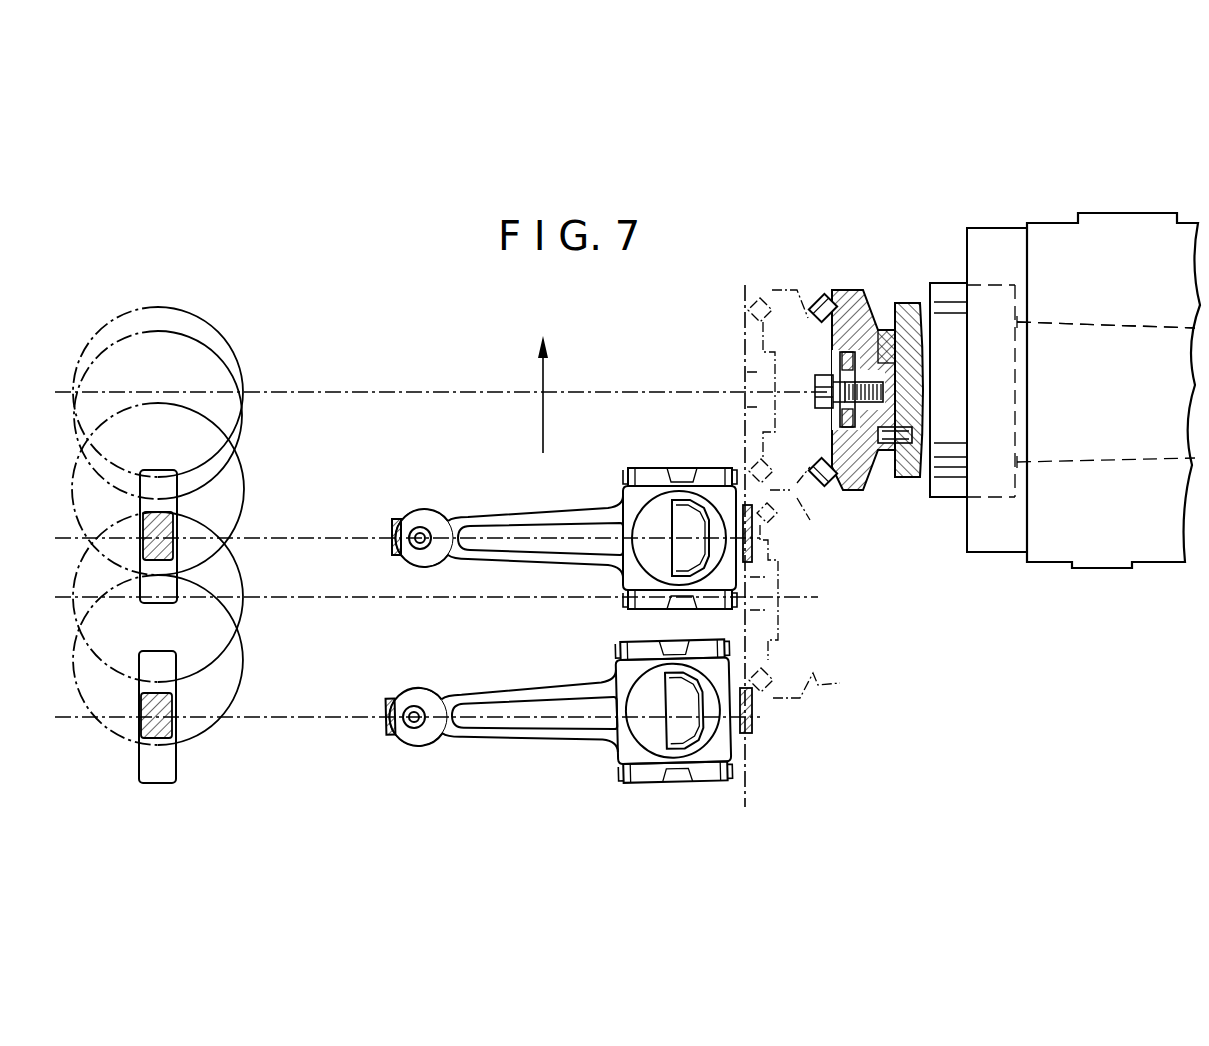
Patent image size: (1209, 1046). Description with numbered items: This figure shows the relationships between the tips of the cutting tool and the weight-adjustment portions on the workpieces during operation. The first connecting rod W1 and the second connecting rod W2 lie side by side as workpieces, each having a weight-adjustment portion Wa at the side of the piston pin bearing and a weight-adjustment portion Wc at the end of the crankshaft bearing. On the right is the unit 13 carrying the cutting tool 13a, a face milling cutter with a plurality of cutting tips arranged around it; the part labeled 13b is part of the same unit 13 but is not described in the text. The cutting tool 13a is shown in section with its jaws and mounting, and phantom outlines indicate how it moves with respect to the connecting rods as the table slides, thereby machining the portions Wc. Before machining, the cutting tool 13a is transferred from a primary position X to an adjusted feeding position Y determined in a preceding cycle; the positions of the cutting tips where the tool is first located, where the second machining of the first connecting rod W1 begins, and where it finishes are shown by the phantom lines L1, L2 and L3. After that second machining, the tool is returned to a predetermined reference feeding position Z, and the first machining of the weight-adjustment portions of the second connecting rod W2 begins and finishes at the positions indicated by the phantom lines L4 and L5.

The phantom line L1 is at (237, 358).
The phantom line L2 is at (248, 447).
The phantom line L3 is at (243, 506).
The phantom line L4 is at (243, 610).
The phantom line L5 is at (243, 685).
The first connecting rod W1 is at (157, 470).
The second connecting rod W2 is at (163, 650).
The weight-adjustment portion Wa is at (395, 530).
The weight-adjustment portion Wc is at (163, 548).
The primary position X is at (850, 290).
The adjusted feeding position Y is at (777, 288).
The reference feeding position Z is at (805, 682).
The unit 13 is at (1093, 193).
The cutting tool 13a is at (866, 490).
The spindle 13b is at (1120, 448).